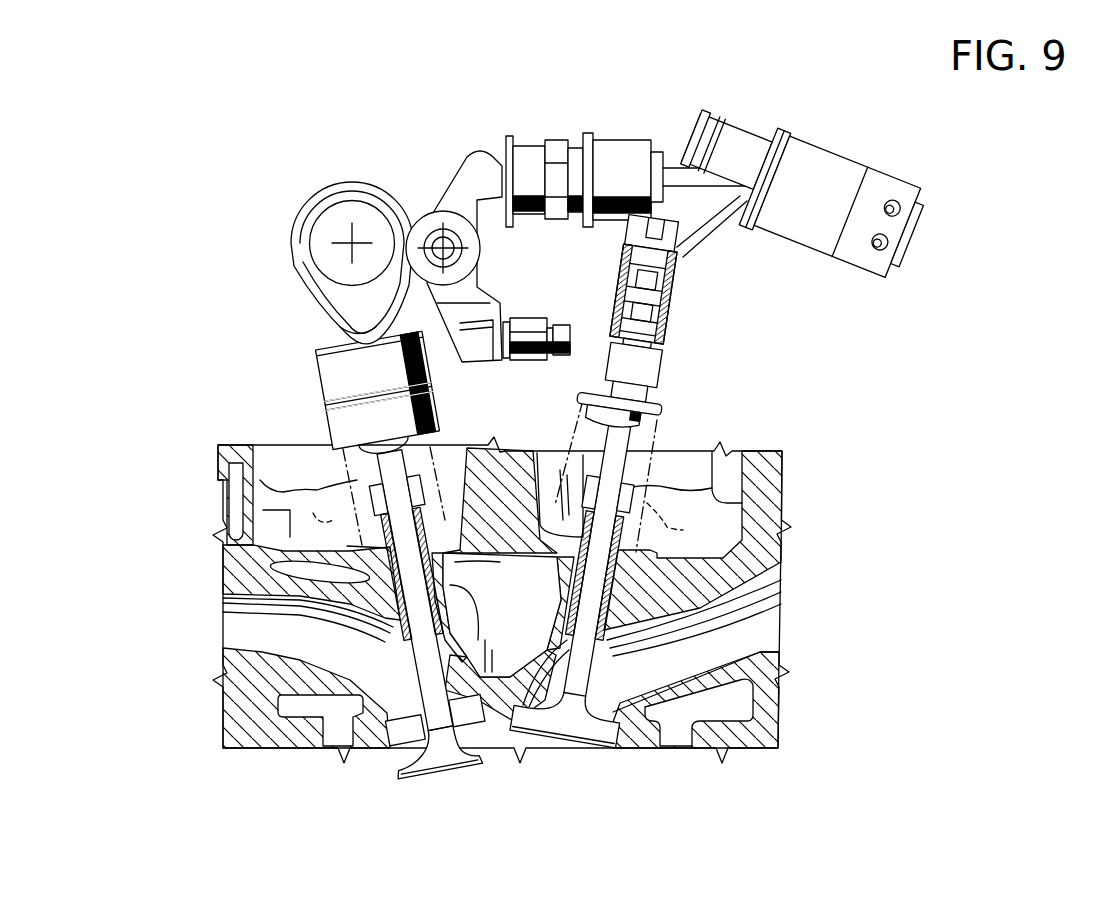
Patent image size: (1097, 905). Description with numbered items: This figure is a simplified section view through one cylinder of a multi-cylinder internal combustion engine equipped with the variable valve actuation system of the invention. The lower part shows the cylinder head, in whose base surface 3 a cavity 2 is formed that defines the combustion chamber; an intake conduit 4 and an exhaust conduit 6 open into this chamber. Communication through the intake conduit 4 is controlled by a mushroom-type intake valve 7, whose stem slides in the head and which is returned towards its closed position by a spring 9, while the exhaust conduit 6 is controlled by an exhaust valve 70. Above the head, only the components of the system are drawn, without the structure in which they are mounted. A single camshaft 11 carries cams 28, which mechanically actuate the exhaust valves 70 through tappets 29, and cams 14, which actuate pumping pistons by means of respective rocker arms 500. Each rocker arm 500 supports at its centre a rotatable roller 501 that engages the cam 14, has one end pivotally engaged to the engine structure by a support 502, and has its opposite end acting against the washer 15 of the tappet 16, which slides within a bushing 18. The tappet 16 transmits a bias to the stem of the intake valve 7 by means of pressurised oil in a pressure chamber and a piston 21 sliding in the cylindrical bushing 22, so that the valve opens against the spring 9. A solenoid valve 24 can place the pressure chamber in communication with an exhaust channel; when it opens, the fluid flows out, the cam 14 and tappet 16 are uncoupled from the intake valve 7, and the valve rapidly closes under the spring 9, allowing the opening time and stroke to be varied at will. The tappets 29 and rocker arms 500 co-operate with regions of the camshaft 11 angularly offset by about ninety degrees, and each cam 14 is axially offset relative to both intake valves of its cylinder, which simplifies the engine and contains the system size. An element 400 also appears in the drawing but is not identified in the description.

The cavity 2 is at (773, 493).
The base surface 3 is at (750, 750).
The intake conduit 4 is at (760, 616).
The exhaust conduit 6 is at (253, 620).
The intake valve 7 is at (579, 740).
The spring 9 is at (501, 519).
The camshaft 11 is at (354, 178).
The cam 14 is at (317, 281).
The washer 15 is at (506, 137).
The tappet 16 is at (546, 158).
The bushing 18 is at (624, 142).
The piston 21 is at (640, 327).
The bushing 22 is at (670, 290).
The solenoid valve 24 is at (855, 176).
The cam 28 is at (360, 330).
The tappet 29 is at (337, 381).
The exhaust valve 70 is at (435, 762).
The sleeve 400 is at (643, 373).
The rocker arm 500 is at (458, 152).
The rotatable roller 501 is at (460, 262).
The support 502 is at (528, 357).